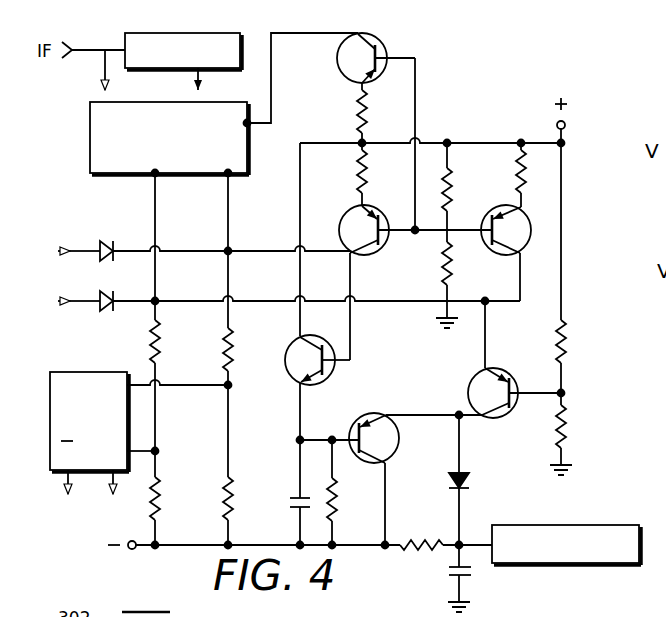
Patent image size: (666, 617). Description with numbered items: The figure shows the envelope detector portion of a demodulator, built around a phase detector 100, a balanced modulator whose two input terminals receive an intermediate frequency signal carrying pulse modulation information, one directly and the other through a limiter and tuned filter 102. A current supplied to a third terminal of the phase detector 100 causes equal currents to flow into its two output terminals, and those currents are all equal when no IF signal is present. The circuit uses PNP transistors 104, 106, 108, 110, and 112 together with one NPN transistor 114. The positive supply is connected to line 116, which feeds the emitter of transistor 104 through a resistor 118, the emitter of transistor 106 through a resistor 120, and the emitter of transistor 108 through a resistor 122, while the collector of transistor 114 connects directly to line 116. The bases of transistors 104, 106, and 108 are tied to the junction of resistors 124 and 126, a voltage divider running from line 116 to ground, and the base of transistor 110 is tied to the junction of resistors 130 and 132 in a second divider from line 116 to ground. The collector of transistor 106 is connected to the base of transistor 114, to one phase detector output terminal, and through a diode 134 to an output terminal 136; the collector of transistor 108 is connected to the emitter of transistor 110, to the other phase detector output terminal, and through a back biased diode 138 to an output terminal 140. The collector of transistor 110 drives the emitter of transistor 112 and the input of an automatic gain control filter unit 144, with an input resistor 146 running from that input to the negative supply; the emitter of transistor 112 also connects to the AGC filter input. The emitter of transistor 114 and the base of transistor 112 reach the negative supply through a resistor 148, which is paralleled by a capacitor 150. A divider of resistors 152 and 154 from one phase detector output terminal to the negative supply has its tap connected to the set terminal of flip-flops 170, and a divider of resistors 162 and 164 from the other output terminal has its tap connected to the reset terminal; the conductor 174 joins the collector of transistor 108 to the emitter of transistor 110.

The phase detector 100 is at (90, 140).
The limiter and tuned filter 102 is at (222, 33).
The PNP transistor 104 is at (378, 40).
The PNP transistor 106 is at (381, 247).
The PNP transistor 108 is at (500, 247).
The PNP transistor 110 is at (514, 412).
The PNP transistor 112 is at (367, 420).
The NPN transistor 114 is at (290, 380).
The line 116 is at (474, 141).
The resistor 118 is at (378, 108).
The resistor 120 is at (377, 166).
The resistor 122 is at (516, 188).
The resistor 124 is at (450, 181).
The resistor 126 is at (443, 263).
The resistor 130 is at (567, 343).
The resistor 132 is at (571, 428).
The diode 134 is at (113, 246).
The output terminal 136 is at (55, 249).
The back biased diode 138 is at (110, 312).
The output terminal 140 is at (55, 304).
The automatic gain control filter unit 144 is at (607, 525).
The input resistor 146 is at (422, 553).
The resistor 148 is at (336, 507).
The capacitor 150 is at (296, 507).
The resistor 152 is at (231, 339).
The resistor 154 is at (234, 498).
The resistor 162 is at (158, 342).
The resistor 164 is at (158, 497).
The flip-flops 170 is at (83, 473).
The conductor 174 is at (487, 343).